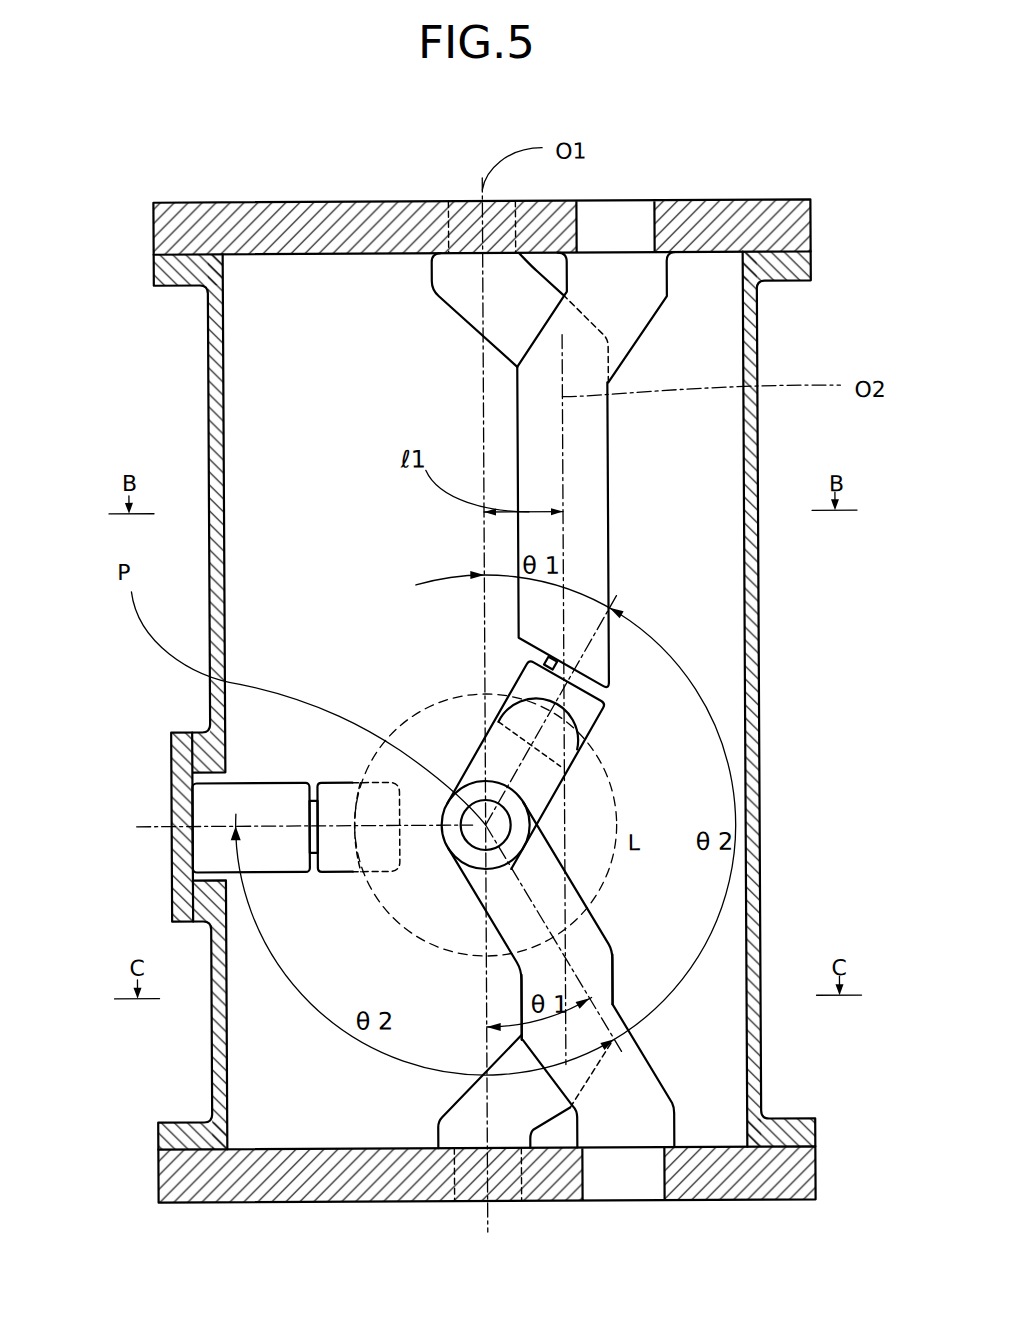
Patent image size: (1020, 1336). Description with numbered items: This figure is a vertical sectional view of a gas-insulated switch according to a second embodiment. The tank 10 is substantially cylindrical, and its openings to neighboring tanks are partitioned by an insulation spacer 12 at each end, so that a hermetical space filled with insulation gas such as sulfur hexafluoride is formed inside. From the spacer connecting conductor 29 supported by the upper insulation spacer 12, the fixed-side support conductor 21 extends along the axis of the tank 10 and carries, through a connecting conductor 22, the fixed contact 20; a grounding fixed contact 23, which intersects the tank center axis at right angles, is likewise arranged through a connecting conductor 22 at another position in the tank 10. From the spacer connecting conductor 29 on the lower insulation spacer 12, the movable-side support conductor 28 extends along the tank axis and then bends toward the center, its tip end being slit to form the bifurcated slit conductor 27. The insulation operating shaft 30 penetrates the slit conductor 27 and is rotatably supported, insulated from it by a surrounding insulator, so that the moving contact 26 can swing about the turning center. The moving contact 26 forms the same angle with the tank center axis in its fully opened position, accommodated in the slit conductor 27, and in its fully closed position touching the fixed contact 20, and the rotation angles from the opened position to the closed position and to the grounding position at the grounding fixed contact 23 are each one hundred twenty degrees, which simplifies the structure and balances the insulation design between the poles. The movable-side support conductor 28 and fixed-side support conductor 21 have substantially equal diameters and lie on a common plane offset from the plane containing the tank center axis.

The tank 10 is at (209, 362).
The insulation spacer 12 is at (813, 222).
The fixed contact 20 is at (597, 722).
The fixed-side support conductor 21 is at (610, 560).
The connecting conductor 22 is at (313, 872).
The grounding fixed contact 23 is at (340, 782).
The moving contact 26 is at (557, 790).
The slit conductor 27 is at (577, 888).
The movable-side support conductor 28 is at (611, 990).
The spacer connecting conductor 29 is at (669, 300).
The insulation operating shaft 30 is at (485, 825).